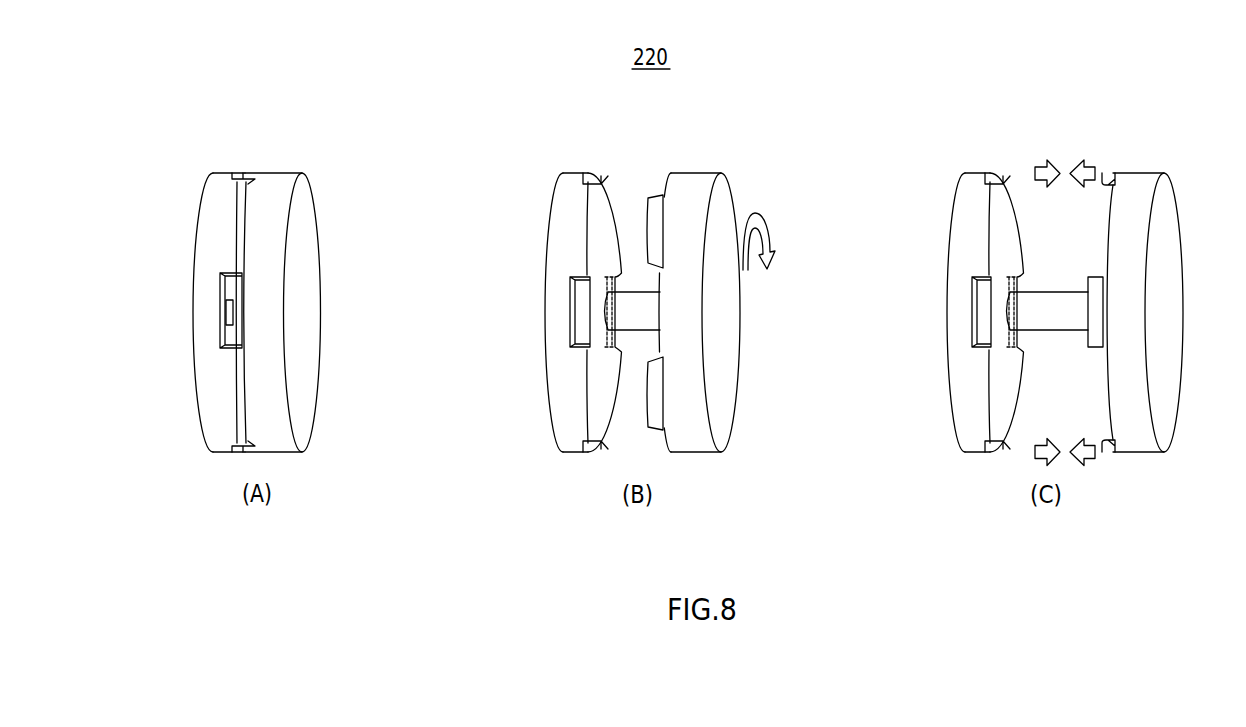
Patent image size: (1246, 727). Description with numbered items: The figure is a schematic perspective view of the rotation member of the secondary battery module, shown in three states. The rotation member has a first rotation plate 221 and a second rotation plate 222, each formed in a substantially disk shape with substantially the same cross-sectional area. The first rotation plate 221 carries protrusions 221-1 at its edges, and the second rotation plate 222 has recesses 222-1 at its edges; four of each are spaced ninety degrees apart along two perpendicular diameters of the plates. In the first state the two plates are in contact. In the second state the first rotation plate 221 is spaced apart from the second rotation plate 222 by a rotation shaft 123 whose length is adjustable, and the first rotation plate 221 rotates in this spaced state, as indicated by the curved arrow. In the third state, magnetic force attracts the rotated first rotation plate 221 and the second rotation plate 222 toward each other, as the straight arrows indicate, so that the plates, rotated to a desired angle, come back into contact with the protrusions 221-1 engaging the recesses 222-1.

The first rotation plate 221 is at (277, 188).
The protrusion 221-1 is at (235, 312).
The second rotation plate 222 is at (212, 247).
The recess 222-1 is at (225, 312).
The rotation shaft 123 is at (603, 312).